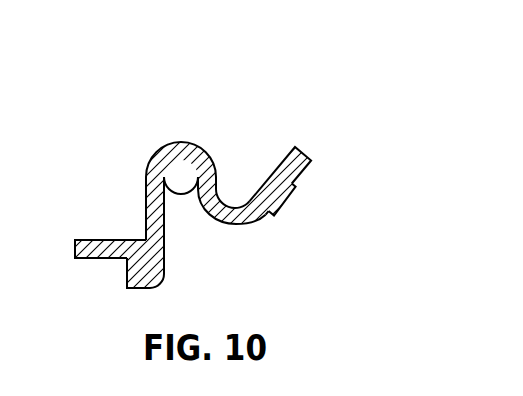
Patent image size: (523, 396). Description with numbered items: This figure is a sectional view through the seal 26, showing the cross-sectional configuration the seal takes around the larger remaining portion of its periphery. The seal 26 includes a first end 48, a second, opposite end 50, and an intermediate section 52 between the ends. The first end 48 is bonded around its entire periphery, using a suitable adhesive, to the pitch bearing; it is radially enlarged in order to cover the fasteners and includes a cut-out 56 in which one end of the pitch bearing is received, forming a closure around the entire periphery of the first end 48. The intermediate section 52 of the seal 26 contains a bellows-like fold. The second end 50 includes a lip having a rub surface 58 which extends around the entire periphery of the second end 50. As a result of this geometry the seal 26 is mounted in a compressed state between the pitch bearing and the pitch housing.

The seal 26 is at (261, 198).
The first end 48 is at (89, 246).
The second end 50 is at (303, 147).
The intermediate section 52 is at (175, 148).
The cut-out 56 is at (90, 278).
The rub surface 58 is at (306, 188).